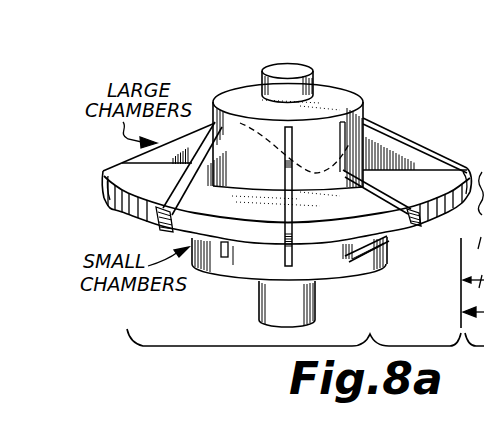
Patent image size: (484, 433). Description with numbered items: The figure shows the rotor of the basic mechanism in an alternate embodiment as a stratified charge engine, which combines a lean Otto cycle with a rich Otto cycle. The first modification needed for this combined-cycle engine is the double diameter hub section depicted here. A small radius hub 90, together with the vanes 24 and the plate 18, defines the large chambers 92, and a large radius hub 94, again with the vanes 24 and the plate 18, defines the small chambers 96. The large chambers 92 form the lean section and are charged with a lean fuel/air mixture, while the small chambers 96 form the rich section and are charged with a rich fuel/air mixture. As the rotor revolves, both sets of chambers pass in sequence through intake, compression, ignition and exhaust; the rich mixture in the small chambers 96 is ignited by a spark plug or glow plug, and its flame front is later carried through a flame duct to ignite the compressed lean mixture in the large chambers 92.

The plate 18 is at (143, 212).
The vanes 24 is at (427, 150).
The small radius hub 90 is at (365, 100).
The large chambers 92 is at (389, 133).
The large radius hub 94 is at (235, 270).
The small chambers 96 is at (330, 255).